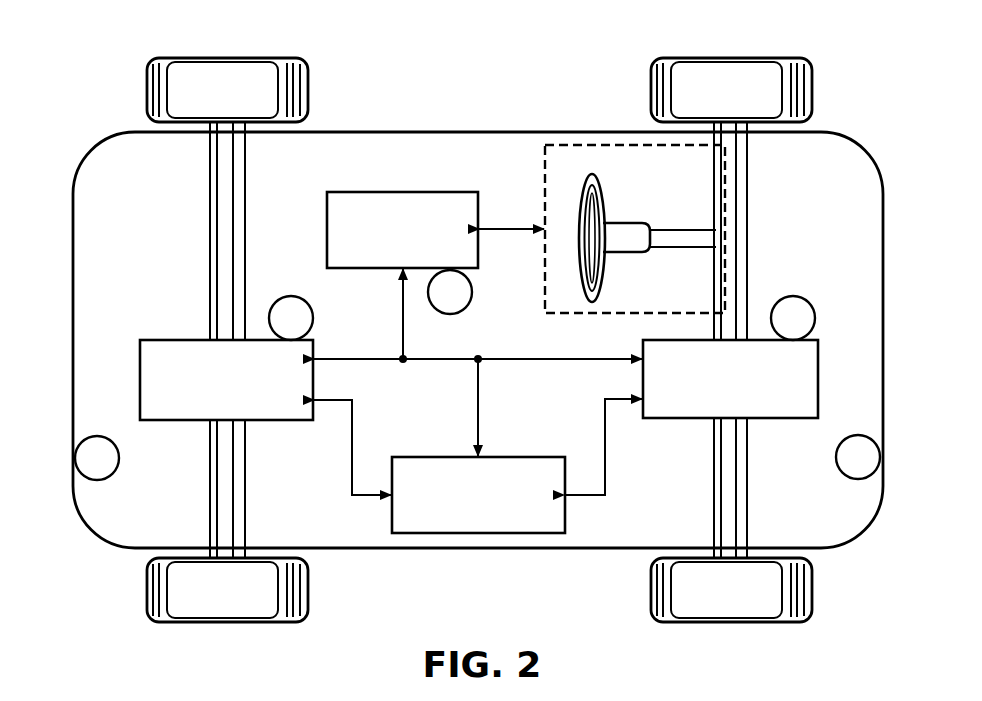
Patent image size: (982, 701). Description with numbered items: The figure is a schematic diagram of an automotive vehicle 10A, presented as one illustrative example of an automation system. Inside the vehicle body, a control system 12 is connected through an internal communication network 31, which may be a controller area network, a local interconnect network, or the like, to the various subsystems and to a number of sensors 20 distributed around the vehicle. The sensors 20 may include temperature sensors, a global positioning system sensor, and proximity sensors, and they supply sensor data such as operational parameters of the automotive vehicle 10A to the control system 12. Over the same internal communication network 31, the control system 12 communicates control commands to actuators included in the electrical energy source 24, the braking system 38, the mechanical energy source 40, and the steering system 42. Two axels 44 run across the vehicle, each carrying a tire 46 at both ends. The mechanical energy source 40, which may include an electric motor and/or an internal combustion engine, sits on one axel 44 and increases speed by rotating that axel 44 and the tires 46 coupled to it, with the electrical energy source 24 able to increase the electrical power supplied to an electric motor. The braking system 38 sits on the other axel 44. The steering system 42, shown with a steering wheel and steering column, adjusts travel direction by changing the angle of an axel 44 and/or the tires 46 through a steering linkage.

The automotive vehicle 10A is at (112, 106).
The tire 46 is at (309, 89).
The axel 44 is at (246, 462).
The control system 12 is at (403, 191).
The steering system 42 is at (544, 206).
The braking system 38 is at (260, 421).
The mechanical energy source 40 is at (697, 420).
The electrical energy source 24 is at (510, 455).
The internal communication network 31 is at (516, 232).
The sensors 20 is at (291, 296).